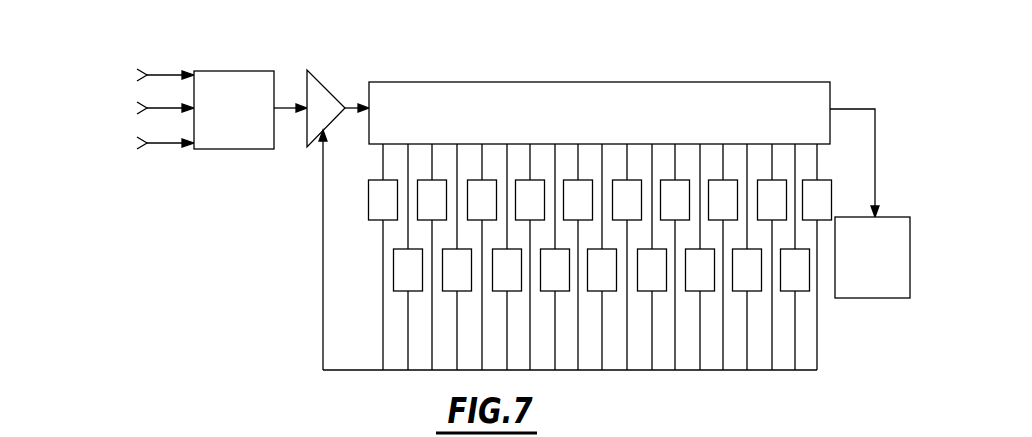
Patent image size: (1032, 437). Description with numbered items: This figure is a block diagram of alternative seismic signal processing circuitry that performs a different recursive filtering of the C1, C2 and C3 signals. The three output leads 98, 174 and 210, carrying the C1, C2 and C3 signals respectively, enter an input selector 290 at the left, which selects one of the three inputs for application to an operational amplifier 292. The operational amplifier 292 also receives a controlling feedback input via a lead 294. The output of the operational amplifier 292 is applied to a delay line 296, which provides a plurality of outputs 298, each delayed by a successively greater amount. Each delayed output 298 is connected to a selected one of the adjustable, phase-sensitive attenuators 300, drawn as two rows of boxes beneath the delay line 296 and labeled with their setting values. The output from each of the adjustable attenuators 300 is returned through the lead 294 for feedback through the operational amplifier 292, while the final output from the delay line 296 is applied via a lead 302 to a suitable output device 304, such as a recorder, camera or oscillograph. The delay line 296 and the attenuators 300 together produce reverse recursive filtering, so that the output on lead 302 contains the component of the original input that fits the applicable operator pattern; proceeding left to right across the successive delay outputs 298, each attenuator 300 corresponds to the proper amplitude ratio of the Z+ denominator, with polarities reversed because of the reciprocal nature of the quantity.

The output lead 98 is at (148, 74).
The output lead 174 is at (163, 110).
The output lead 210 is at (149, 145).
The input selector 290 is at (200, 71).
The operational amplifier 292 is at (323, 82).
The lead 294 is at (323, 259).
The delay line 296 is at (420, 82).
The outputs 298 is at (555, 160).
The adjustable, phase-sensitive attenuators 300 is at (423, 216).
The lead 302 is at (843, 109).
The output device 304 is at (852, 298).